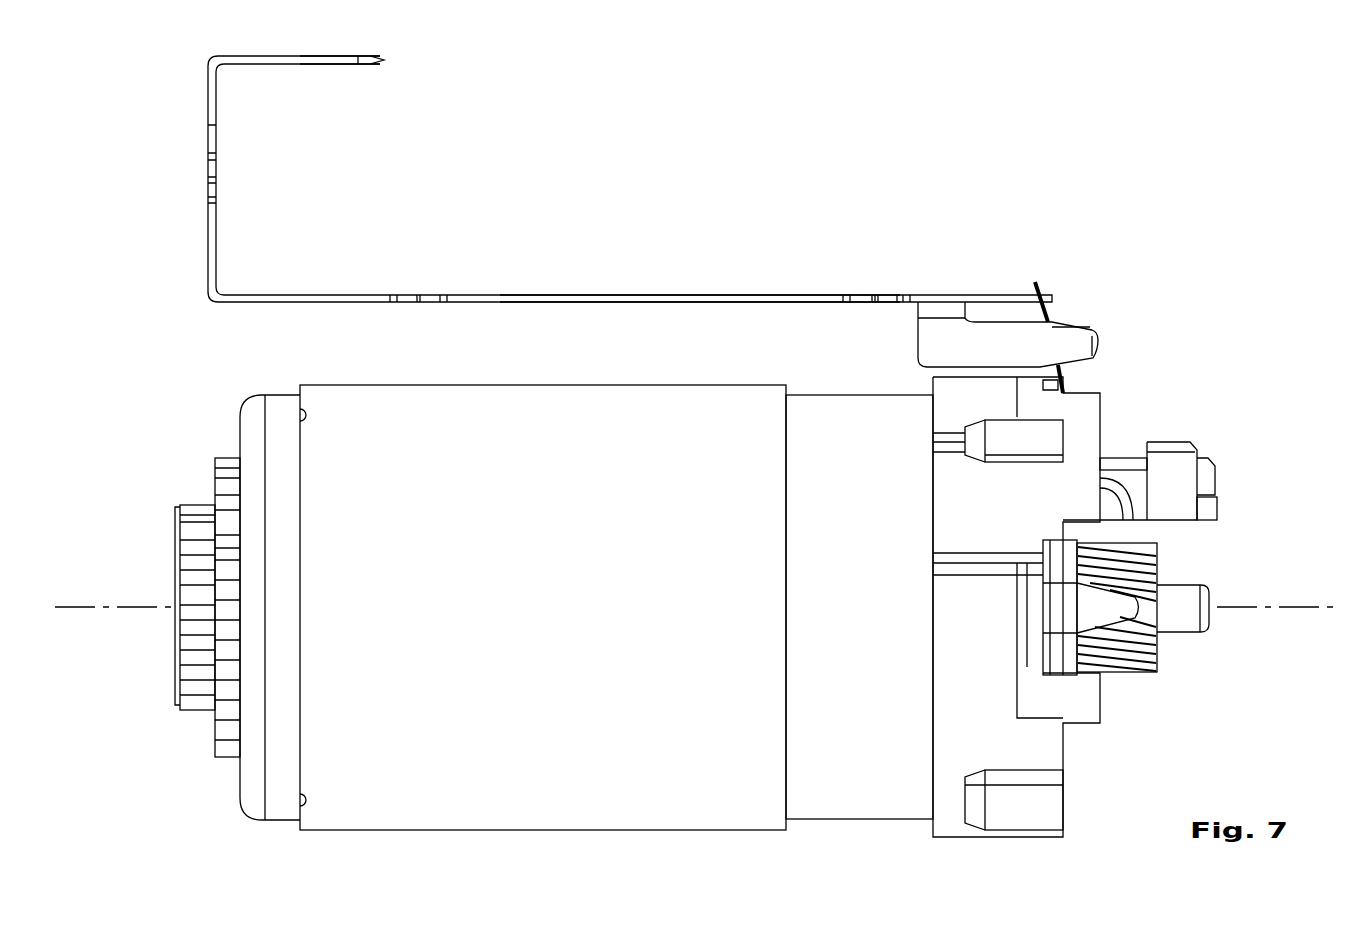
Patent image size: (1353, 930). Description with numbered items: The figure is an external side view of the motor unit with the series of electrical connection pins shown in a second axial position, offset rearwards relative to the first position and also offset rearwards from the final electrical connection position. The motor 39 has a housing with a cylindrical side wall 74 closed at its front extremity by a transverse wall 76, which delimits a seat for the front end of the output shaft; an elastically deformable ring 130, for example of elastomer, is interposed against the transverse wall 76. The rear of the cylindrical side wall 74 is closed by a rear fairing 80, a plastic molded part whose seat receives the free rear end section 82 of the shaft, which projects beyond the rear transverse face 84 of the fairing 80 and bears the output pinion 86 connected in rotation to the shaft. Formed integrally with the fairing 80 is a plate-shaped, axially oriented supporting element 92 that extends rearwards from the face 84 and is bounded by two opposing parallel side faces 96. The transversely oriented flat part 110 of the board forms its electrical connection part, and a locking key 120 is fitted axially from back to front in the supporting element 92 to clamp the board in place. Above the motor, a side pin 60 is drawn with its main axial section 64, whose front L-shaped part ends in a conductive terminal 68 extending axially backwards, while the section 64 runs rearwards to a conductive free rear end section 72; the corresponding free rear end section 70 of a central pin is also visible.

The motor 39 is at (466, 849).
The side pins 60 is at (793, 292).
The main axial section 64 is at (748, 298).
The conductive terminal 68 is at (337, 60).
The conductive free rear end section 70 is at (996, 292).
The conductive free rear end section 72 is at (1058, 347).
The cylindrical side wall 74 is at (587, 791).
The transverse wall 76 is at (240, 438).
The rear fairing 80 is at (966, 733).
The free rear end section 82 is at (1178, 600).
The rear transverse face 84 is at (1065, 753).
The output pinion 86 is at (1150, 678).
The supporting element 92 is at (1226, 509).
The side faces 96 is at (1170, 465).
The transversely oriented flat part 110 is at (1050, 276).
The locking key 120 is at (1215, 463).
The elastically deformable ring 130 is at (232, 702).